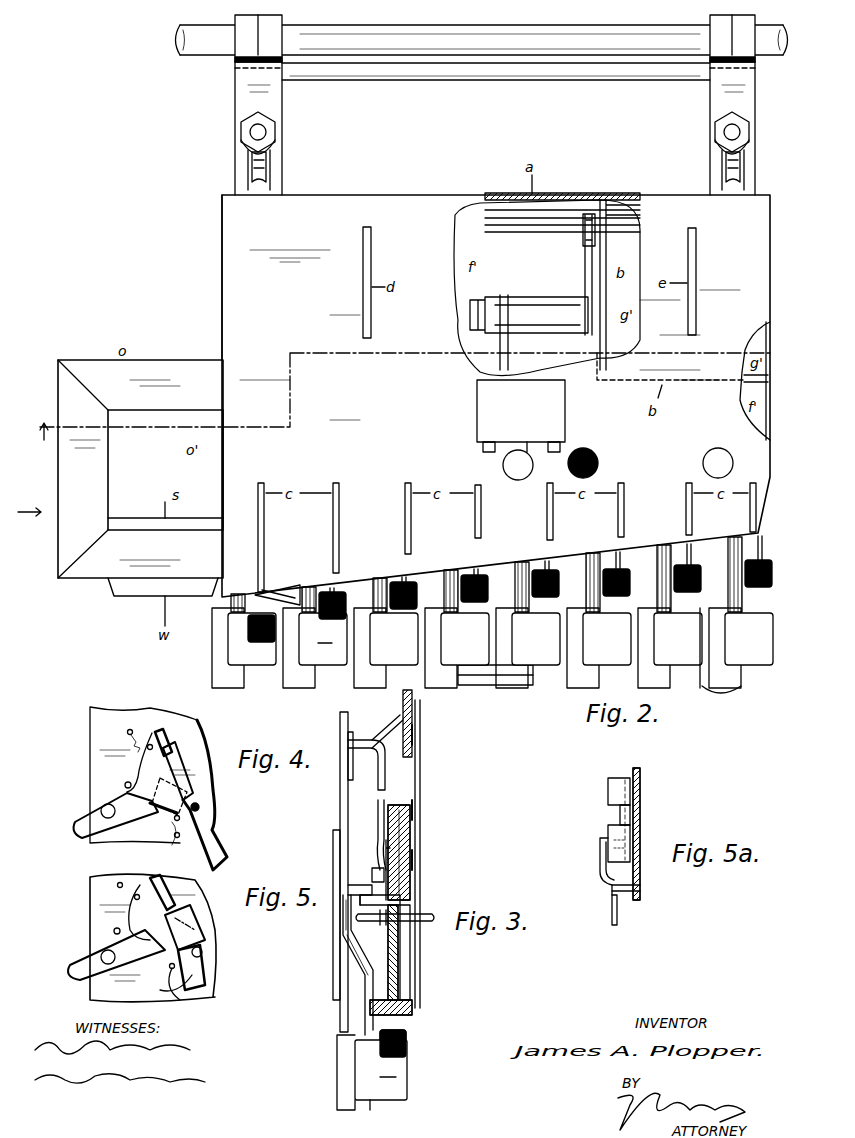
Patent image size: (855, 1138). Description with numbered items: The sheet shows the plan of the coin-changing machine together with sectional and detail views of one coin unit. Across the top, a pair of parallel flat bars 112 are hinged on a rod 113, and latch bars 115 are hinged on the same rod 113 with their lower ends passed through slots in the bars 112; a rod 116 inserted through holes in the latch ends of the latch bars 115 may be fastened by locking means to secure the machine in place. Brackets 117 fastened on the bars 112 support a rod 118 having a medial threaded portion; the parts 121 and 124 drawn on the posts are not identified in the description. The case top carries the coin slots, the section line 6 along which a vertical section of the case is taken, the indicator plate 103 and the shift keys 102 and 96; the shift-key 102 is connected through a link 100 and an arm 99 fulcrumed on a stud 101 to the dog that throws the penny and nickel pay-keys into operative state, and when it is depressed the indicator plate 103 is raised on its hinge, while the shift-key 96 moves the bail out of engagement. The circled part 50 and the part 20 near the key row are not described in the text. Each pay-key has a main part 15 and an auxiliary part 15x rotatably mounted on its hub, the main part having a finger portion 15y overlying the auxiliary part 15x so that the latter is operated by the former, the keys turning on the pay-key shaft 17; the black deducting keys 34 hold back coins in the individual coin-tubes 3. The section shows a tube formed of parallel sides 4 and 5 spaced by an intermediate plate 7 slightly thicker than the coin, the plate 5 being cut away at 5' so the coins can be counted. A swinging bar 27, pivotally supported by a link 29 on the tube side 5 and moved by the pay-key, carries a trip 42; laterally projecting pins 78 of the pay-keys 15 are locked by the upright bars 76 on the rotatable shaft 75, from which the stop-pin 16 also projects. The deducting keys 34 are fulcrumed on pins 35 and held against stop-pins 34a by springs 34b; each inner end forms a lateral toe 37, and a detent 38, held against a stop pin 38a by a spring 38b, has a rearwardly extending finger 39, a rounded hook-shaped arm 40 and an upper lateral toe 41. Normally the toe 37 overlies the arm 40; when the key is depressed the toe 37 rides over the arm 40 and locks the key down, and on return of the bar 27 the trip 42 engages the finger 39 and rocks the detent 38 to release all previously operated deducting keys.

In FIG. 2, the rod 113 is at (436, 36).
In FIG. 2, the latch bars 115 is at (235, 22).
In FIG. 2, the parallel flat bars 112 is at (264, 28).
In FIG. 2, the rod 116 is at (445, 81).
In FIG. 2, the brackets 117 is at (248, 102).
In FIG. 2, the rod 118 is at (268, 131).
In FIG. 2, the post slot 121 is at (272, 160).
In FIG. 2, the slide piece 124 is at (250, 165).
In FIG. 2, the section line 6 is at (771, 353).
In FIG. 2, the pay-key shaft 17 is at (508, 220).
In FIG. 2, the link 100 is at (582, 238).
In FIG. 2, the arm 99 is at (584, 270).
In FIG. 2, the stud 101 is at (512, 310).
In FIG. 2, the indicator plate 103 is at (566, 401).
In FIG. 2, the shift-key 102 is at (502, 465).
In FIG. 2, the shift-key 96 is at (599, 460).
In FIG. 2, the signal R 50 is at (703, 463).
In FIG. 2, the auxiliary part of pay-key 15x is at (302, 593).
In FIG. 3, the auxiliary part of pay-key 15x is at (339, 718).
In FIG. 2, the finger portion 15y is at (300, 668).
In FIG. 3, the finger portion 15y is at (409, 1079).
In FIG. 2, the deducting keys 34 is at (334, 592).
In FIG. 4, the deducting keys 34 is at (200, 824).
In FIG. 5, the deducting keys 34 is at (206, 984).
In FIG. 3, the deducting keys 34 is at (408, 1040).
In FIG. 5A, the deducting keys 34 is at (611, 915).
In FIG. 2, the pay-key 15 is at (514, 593).
In FIG. 3, the pay-key 15 is at (333, 846).
In FIG. 2, the key lever 20 is at (720, 655).
In FIG. 4, the side of coin-tube 4 is at (100, 778).
In FIG. 5, the side of coin-tube 4 is at (100, 930).
In FIG. 3, the side of coin-tube 4 is at (393, 881).
In FIG. 5A, the side of coin-tube 4 is at (641, 791).
In FIG. 4, the lateral toe 41 is at (170, 733).
In FIG. 5, the lateral toe 41 is at (122, 888).
In FIG. 5A, the lateral toe 41 is at (607, 791).
In FIG. 4, the hook-shaped arm 40 is at (175, 781).
In FIG. 5, the hook-shaped arm 40 is at (203, 954).
In FIG. 3, the hook-shaped arm 40 is at (370, 868).
In FIG. 5A, the hook-shaped arm 40 is at (607, 830).
In FIG. 4, the detent 38 is at (141, 762).
In FIG. 5, the detent 38 is at (140, 912).
In FIG. 5A, the detent 38 is at (619, 813).
In FIG. 4, the stop pin 38a is at (124, 790).
In FIG. 5, the stop pin 38a is at (113, 943).
In FIG. 4, the spring 38b is at (136, 732).
In FIG. 5, the spring 38b is at (130, 903).
In FIG. 4, the finger 39 is at (78, 829).
In FIG. 5, the finger 39 is at (72, 967).
In FIG. 3, the finger 39 is at (377, 807).
In FIG. 5A, the finger 39 is at (641, 890).
In FIG. 4, the lateral toe 37 is at (160, 815).
In FIG. 5, the lateral toe 37 is at (198, 928).
In FIG. 3, the lateral toe 37 is at (402, 896).
In FIG. 5A, the lateral toe 37 is at (599, 851).
In FIG. 4, the stop-pins 34a is at (186, 822).
In FIG. 5, the stop-pins 34a is at (158, 990).
In FIG. 4, the springs 34b is at (172, 845).
In FIG. 5, the springs 34b is at (190, 1000).
In FIG. 3, the trip 42 is at (400, 706).
In FIG. 3, the swinging bar 27 is at (413, 705).
In FIG. 3, the link 29 is at (421, 793).
In FIG. 3, the side of coin-tube 5 is at (418, 852).
In FIG. 3, the intermediate plate 7 is at (400, 863).
In FIG. 3, the laterally projecting pins 78 is at (347, 892).
In FIG. 3, the rotatable shaft 75 is at (433, 915).
In FIG. 3, the upright bars 76 is at (348, 940).
In FIG. 3, the stop-pin 16 is at (356, 960).
In FIG. 3, the cut-away portion 5' is at (420, 952).
In FIG. 3, the coin-tubes 3 is at (405, 975).
In FIG. 3, the pins 35 is at (413, 1001).